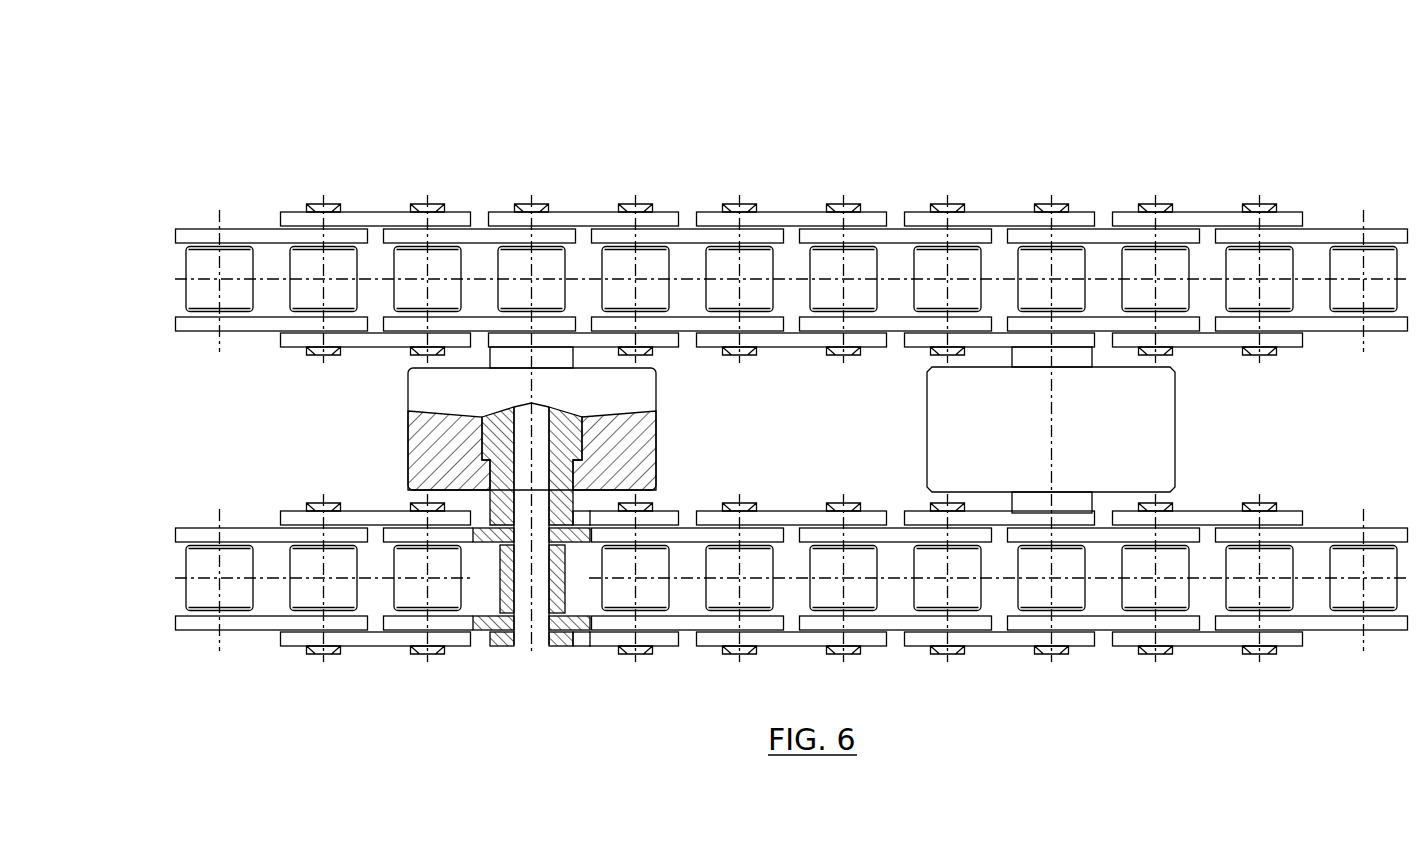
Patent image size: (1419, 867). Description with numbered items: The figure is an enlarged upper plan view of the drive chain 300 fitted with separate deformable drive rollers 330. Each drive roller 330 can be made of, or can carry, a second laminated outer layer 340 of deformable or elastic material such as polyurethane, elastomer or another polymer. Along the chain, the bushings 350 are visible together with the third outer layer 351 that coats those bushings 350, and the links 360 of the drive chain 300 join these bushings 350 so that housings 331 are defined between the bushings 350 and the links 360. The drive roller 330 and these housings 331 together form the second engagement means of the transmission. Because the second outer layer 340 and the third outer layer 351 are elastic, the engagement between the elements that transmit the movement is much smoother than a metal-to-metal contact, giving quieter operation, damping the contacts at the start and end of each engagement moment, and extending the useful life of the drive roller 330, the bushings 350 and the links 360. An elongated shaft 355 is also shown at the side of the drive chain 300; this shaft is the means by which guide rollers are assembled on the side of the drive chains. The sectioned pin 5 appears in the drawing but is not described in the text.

The drive chain 300 is at (873, 152).
The pin 5 is at (528, 468).
The drive roller 330 is at (1171, 439).
The housing 331 is at (904, 584).
The second laminated outer layer 340 is at (437, 440).
The bushing 350 is at (731, 272).
The third outer layer 351 is at (508, 603).
The elongated shaft 355 is at (630, 205).
The link 360 is at (1098, 237).